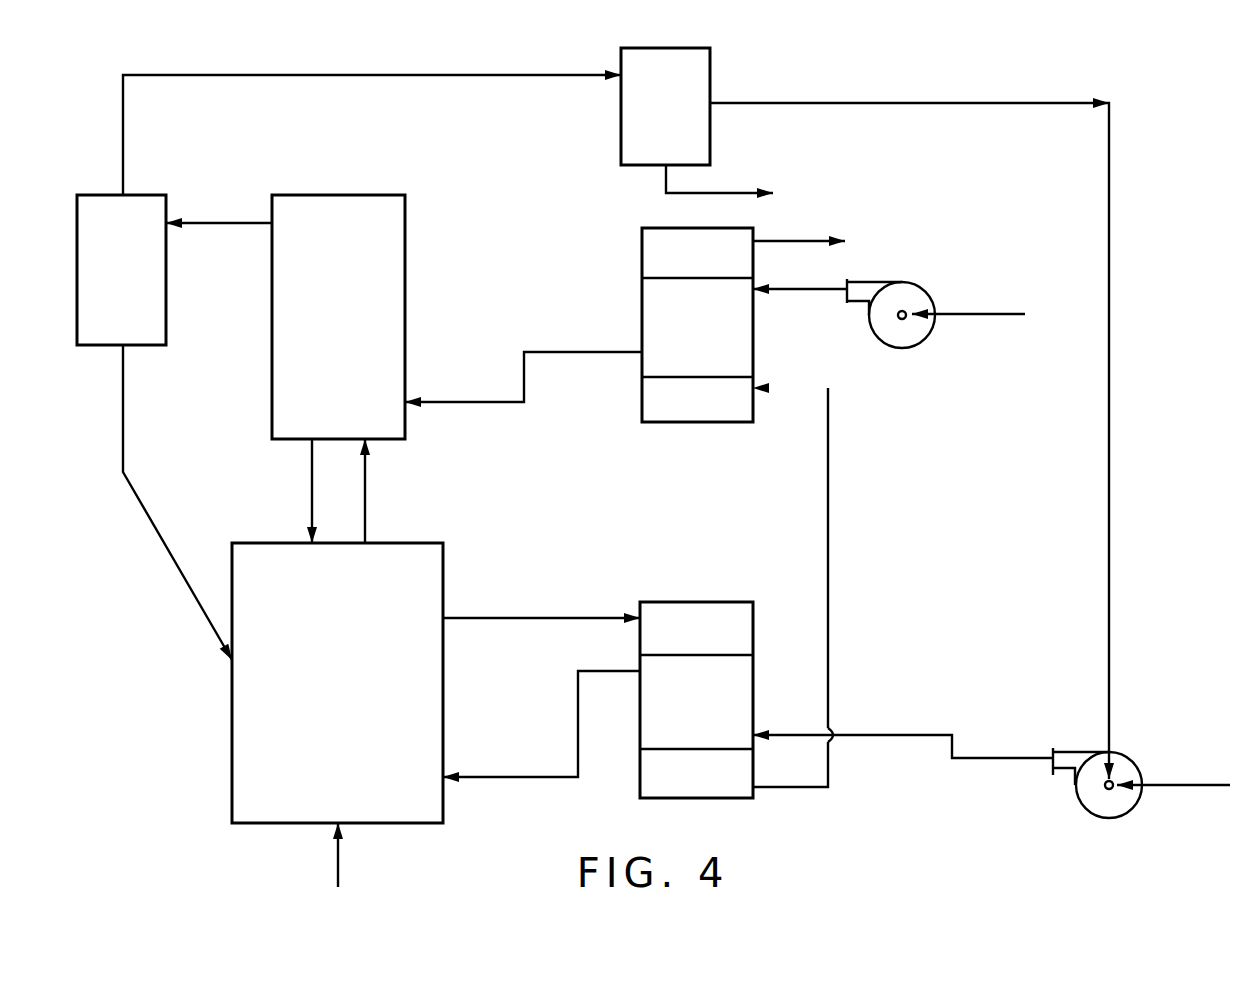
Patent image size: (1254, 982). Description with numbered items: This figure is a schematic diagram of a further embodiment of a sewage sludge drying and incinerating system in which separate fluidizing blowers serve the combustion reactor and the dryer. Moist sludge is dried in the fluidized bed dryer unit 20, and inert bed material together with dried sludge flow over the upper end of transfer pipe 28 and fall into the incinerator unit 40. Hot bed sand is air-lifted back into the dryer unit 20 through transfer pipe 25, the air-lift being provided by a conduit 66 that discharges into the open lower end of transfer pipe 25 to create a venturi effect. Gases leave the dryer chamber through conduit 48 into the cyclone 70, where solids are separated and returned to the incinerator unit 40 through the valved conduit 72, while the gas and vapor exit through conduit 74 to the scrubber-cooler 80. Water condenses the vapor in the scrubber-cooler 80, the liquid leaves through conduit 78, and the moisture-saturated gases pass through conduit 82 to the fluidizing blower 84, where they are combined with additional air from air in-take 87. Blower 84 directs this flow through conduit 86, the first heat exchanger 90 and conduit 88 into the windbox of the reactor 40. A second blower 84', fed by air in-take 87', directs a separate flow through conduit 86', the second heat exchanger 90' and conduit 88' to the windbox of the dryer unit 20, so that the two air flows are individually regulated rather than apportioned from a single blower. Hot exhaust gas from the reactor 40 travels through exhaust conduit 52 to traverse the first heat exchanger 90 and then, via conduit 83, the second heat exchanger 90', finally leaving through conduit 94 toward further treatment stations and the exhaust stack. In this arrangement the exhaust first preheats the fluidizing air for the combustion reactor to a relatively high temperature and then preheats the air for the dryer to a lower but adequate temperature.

The dryer unit 20 is at (405, 265).
The transfer pipe 25 is at (365, 495).
The transfer pipe 28 is at (312, 488).
The incinerator unit 40 is at (447, 580).
The conduit 48 is at (212, 223).
The exhaust conduit 52 is at (535, 618).
The conduit 66 is at (338, 868).
The cyclone 70 is at (166, 280).
The valved conduit 72 is at (123, 430).
The conduit 74 is at (403, 75).
The conduit 78 is at (666, 180).
The scrubber-cooler 80 is at (710, 66).
The conduit 82 is at (1109, 380).
The conduit 83 is at (830, 600).
The fluidizing blower 84 is at (1109, 763).
The fluidizing blower 84' is at (918, 301).
The conduit 86 is at (903, 718).
The conduit 86' is at (800, 314).
The air in-take 87 is at (1173, 762).
The air in-take 87' is at (977, 334).
The conduit 88 is at (541, 726).
The conduit 88' is at (523, 360).
The first heat exchanger 90 is at (696, 666).
The second heat exchanger 90' is at (697, 349).
The conduit 94 is at (783, 241).